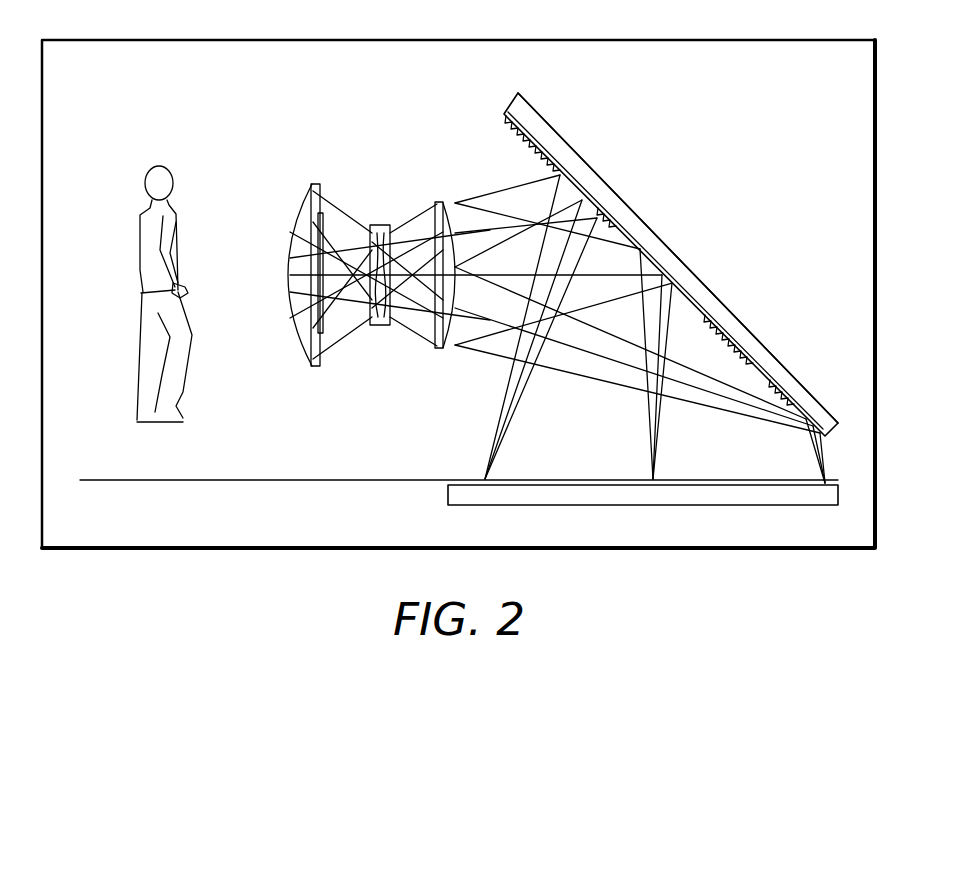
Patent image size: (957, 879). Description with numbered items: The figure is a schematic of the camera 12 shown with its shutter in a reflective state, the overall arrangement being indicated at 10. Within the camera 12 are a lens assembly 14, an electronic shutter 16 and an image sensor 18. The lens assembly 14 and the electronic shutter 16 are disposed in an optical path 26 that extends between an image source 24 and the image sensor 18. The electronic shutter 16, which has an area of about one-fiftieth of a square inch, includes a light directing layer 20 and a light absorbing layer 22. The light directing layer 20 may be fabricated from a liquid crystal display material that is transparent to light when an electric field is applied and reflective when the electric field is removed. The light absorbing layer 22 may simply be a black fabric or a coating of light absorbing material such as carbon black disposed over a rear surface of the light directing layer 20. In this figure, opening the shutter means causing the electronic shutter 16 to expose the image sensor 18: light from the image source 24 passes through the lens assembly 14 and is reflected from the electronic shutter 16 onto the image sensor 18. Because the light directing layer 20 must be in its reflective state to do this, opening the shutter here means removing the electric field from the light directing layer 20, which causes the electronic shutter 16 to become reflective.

The display system 10 is at (860, 40).
The camera 12 is at (849, 210).
The lens assembly 14 is at (375, 388).
The electronic shutter 16 is at (498, 118).
The image sensor 18 is at (839, 497).
The light directing layer 20 is at (533, 143).
The light absorbing layer 22 is at (593, 177).
The image source 24 is at (137, 203).
The optical path 26 is at (222, 128).